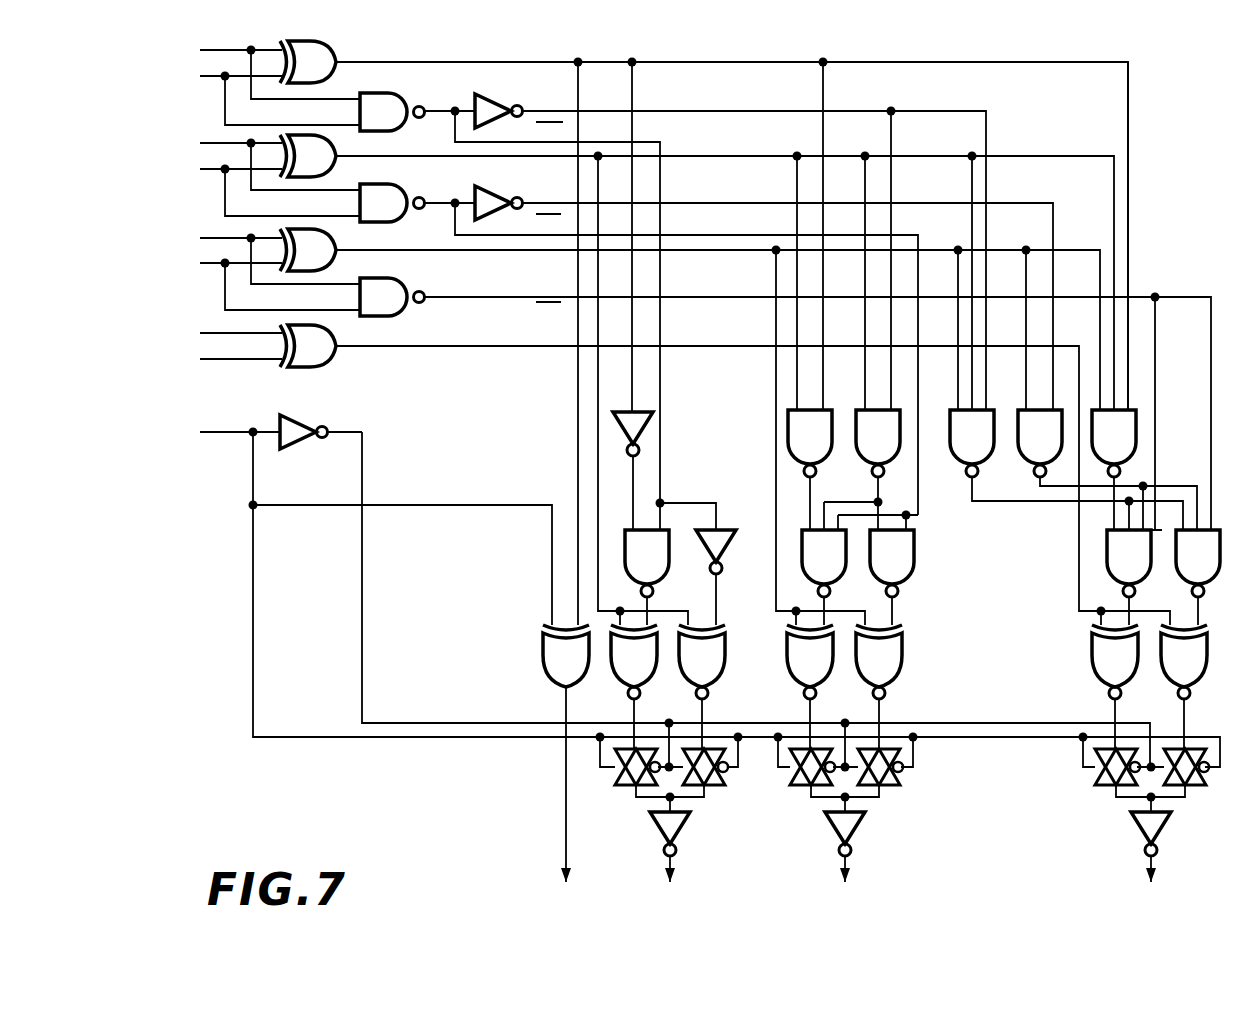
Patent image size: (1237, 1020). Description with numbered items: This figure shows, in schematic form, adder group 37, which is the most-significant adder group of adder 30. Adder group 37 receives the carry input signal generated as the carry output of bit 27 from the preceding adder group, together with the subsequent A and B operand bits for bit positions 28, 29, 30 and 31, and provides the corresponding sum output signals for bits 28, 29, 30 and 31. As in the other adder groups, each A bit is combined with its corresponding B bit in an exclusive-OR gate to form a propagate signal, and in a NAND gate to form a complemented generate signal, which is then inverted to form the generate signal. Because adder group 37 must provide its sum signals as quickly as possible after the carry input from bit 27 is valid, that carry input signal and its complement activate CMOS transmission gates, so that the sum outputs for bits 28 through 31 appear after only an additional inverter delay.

The adder group 37 is at (324, 820).
The bit 28 operand input stage (A28, B28 propagate/generate gates) 28 is at (331, 85).
The bit 29 operand input stage (A29, B29 propagate/generate gates) 29 is at (331, 177).
The adder 30 is at (282, 271).
The bit 31 operand input stage (A31, B31 propagate gate) 31 is at (238, 347).
The carry-out 27 input (COUT27) and inverter 27 is at (233, 432).